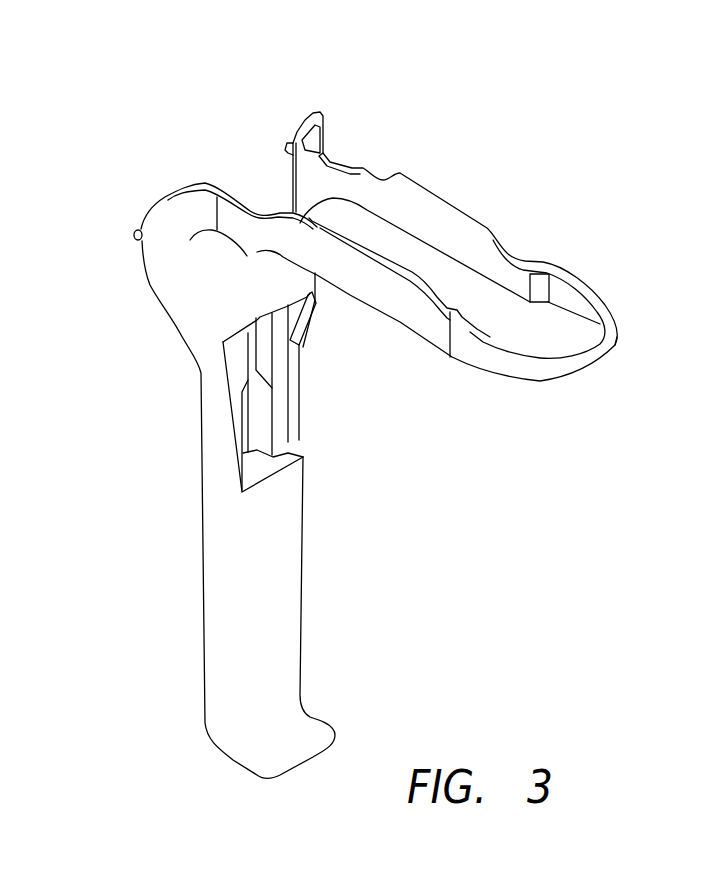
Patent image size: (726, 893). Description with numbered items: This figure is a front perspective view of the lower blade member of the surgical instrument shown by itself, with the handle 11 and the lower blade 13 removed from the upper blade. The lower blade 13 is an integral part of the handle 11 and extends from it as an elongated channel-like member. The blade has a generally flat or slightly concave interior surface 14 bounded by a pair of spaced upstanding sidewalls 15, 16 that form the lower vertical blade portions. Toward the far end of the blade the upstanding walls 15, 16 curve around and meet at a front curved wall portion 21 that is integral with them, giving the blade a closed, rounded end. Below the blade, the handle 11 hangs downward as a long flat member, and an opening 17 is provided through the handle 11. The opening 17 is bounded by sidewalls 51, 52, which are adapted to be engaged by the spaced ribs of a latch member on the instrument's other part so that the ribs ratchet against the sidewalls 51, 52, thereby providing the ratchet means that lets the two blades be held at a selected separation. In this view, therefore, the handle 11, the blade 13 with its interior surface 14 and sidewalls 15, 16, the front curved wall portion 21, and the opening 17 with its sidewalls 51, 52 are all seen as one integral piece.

The handle 11 is at (258, 652).
The lower blade 13 is at (480, 217).
The interior surface 14 is at (520, 322).
The upstanding sidewall 15 is at (436, 322).
The upstanding sidewall 16 is at (436, 222).
The opening 17 is at (250, 433).
The front curved wall portion 21 is at (603, 347).
The sidewall of opening 51 is at (247, 405).
The sidewall of opening 52 is at (270, 400).